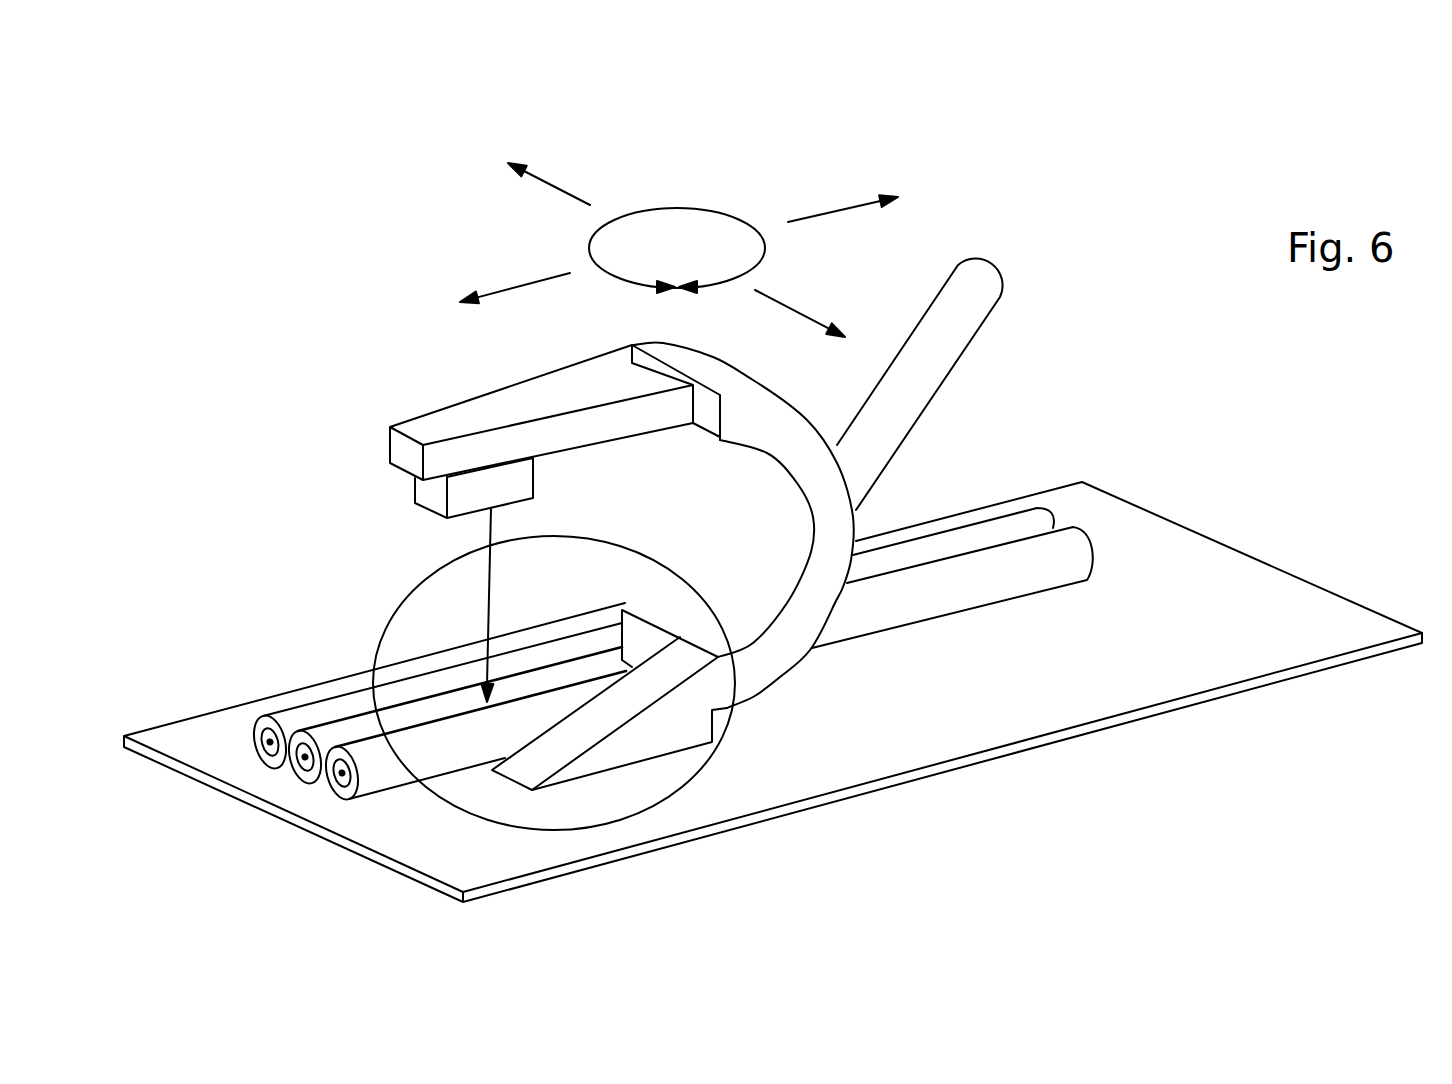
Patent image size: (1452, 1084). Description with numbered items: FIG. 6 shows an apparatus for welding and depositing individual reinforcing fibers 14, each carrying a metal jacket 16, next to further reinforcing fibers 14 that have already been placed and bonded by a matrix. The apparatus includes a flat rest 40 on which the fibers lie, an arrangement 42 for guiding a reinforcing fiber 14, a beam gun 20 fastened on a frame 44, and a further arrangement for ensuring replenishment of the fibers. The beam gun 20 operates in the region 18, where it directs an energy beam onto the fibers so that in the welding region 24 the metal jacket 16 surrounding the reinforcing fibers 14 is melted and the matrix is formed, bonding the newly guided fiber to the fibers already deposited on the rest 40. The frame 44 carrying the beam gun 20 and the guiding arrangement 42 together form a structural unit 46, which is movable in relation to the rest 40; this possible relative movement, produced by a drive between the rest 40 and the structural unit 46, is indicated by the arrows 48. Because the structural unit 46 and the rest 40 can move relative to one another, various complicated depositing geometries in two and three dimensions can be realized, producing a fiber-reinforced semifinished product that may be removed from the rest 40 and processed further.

The reinforcing fibers 14 is at (270, 752).
The metal jacket 16 is at (305, 777).
The region 18 is at (703, 768).
The beam gun 20 is at (458, 493).
The welding region 24 is at (322, 700).
The rest 40 is at (1292, 615).
The arrangement for guiding a reinforcing fiber 42 is at (632, 747).
The frame 44 is at (750, 413).
The structural unit 46 is at (777, 653).
The arrows 48 is at (755, 218).